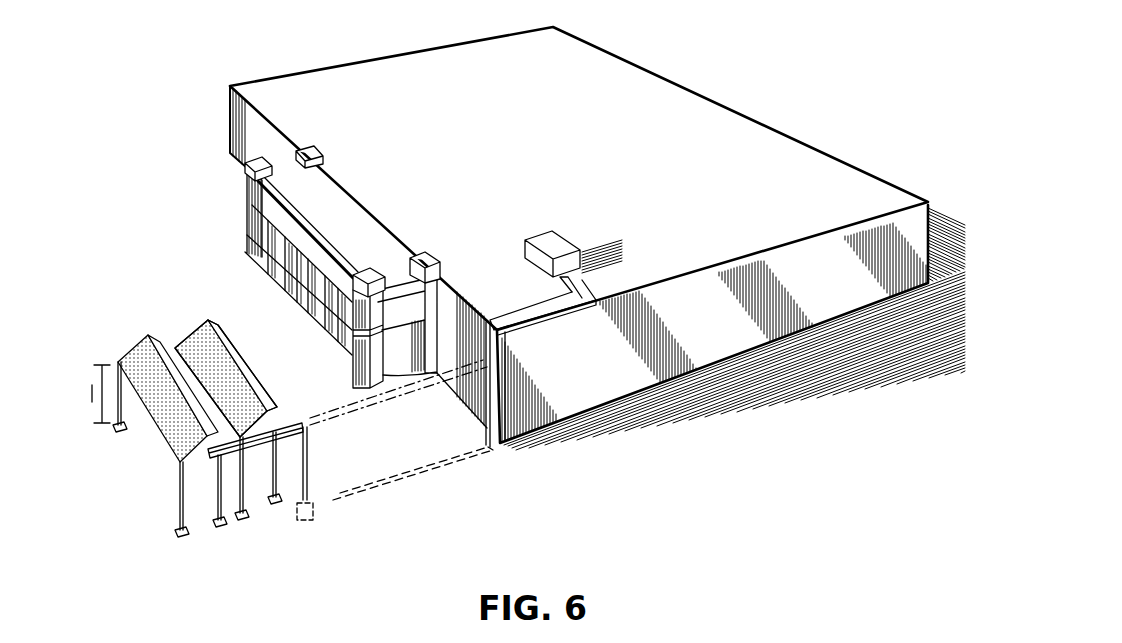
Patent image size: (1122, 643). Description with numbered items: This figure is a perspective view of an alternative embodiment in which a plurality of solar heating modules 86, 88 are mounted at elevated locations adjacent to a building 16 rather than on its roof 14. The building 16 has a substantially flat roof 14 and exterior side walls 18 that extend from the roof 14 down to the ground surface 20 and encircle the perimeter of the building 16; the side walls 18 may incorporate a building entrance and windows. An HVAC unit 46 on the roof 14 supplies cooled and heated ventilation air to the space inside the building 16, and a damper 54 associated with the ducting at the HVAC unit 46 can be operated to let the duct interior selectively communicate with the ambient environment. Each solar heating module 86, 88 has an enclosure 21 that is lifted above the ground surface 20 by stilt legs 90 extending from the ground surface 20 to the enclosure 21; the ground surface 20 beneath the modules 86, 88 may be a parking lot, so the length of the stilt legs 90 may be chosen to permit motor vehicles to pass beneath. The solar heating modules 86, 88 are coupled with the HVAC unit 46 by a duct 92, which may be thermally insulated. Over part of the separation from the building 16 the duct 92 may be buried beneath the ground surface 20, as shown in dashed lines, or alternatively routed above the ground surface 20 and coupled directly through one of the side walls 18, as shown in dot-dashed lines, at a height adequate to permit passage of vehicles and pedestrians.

The building 16 is at (597, 250).
The roof 14 is at (568, 166).
The exterior side walls 18 is at (237, 153).
The ground surface 20 is at (549, 491).
The HVAC unit 46 is at (542, 238).
The damper 54 is at (552, 277).
The duct 92 is at (566, 318).
The solar heating module 86 is at (193, 365).
The solar heating module 88 is at (202, 298).
The enclosure 21 is at (132, 347).
The stilt legs 90 is at (125, 410).